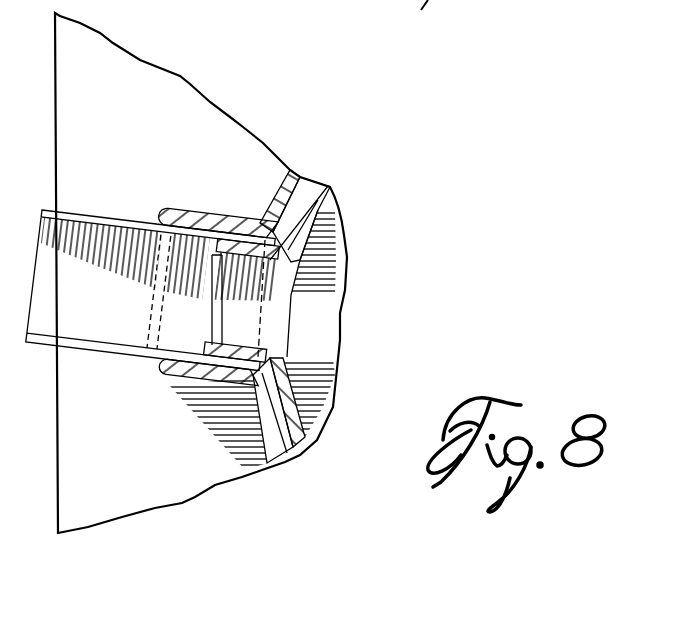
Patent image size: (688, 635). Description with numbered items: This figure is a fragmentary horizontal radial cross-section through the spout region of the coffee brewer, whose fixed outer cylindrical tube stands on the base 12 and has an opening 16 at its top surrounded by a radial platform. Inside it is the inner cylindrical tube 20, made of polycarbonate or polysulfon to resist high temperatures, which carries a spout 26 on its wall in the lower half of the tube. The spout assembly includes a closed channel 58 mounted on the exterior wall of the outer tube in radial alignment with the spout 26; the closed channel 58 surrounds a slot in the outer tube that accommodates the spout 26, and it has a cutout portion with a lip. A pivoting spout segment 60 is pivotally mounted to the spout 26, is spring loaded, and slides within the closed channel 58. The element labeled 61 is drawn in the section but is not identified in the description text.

The base 12 is at (185, 500).
The opening 16 is at (300, 184).
The inner cylindrical tube 20 is at (313, 207).
The spout 26 is at (248, 313).
The closed channel 58 is at (172, 376).
The pivoting spout segment 60 is at (80, 257).
The flange 61 is at (165, 215).